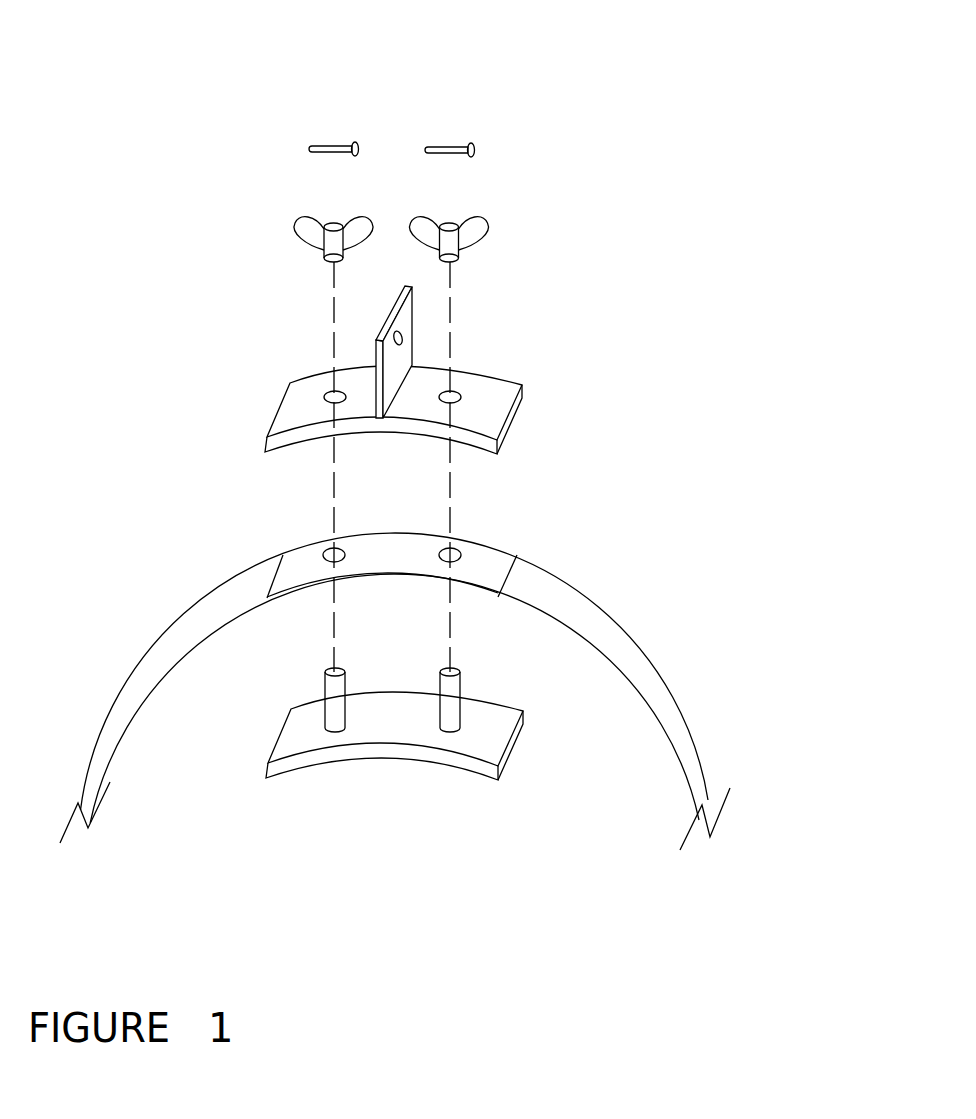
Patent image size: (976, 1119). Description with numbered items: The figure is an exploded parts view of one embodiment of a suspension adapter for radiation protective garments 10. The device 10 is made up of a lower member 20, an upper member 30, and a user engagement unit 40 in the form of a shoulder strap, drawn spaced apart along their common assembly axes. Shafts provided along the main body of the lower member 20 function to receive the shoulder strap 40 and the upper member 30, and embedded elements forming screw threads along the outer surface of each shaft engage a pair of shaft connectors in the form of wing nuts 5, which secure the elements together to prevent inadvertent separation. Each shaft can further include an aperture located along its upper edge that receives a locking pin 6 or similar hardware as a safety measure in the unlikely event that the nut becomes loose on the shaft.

The suspension adapter for radiation protective garments 10 is at (122, 96).
The wing nuts 5 is at (295, 226).
The locking pin 6 is at (333, 143).
The upper member 30 is at (242, 302).
The user engagement unit 40 is at (735, 537).
The lower member 20 is at (339, 720).